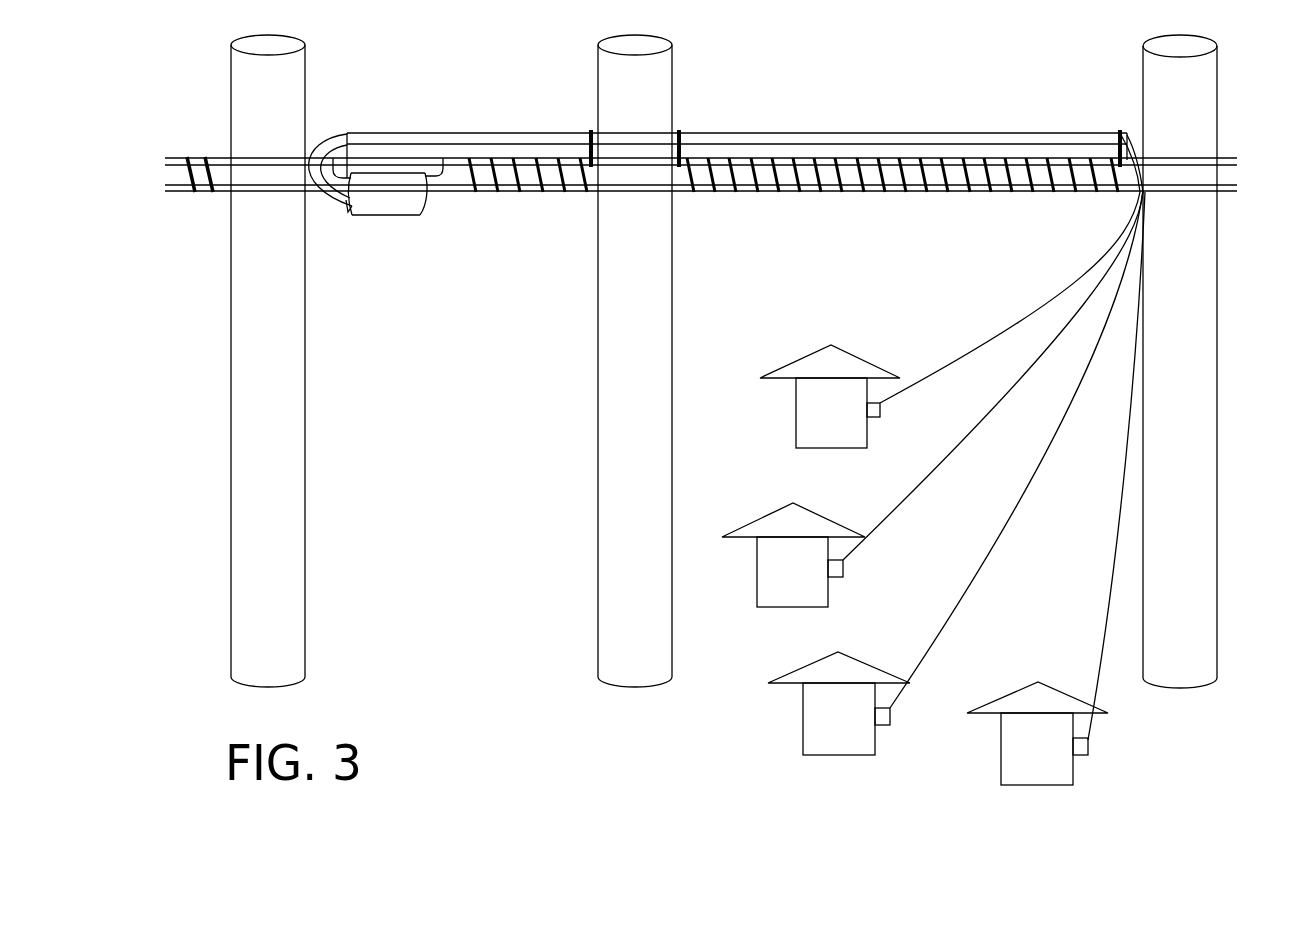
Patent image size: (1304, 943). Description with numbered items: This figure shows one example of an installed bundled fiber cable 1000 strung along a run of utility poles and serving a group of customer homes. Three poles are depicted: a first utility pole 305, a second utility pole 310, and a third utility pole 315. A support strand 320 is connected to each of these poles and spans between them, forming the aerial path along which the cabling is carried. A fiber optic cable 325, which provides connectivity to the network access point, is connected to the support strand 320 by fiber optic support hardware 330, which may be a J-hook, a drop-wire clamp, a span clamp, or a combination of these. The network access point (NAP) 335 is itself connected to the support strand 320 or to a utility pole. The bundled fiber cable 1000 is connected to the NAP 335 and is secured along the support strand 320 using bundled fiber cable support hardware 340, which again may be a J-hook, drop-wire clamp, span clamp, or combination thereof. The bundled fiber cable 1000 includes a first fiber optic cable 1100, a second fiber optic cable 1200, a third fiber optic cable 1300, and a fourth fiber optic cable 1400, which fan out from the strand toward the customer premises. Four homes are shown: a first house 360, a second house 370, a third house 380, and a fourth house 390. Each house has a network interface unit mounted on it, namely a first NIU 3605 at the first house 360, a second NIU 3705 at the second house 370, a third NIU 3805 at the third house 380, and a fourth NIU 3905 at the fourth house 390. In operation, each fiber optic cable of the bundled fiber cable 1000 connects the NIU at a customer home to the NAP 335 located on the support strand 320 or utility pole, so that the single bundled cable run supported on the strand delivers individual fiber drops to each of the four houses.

The first utility pole 305 is at (305, 459).
The second utility pole 310 is at (680, 465).
The third utility pole 315 is at (1217, 455).
The support strand 320 is at (220, 158).
The fiber optic cable 325 is at (220, 192).
The fiber optic support hardware 330 is at (190, 168).
The network access point (NAP) 335 is at (388, 214).
The bundled fiber cable support hardware 340 is at (347, 133).
The bundled fiber cable 1000 is at (915, 135).
The first fiber optic cable 1100 is at (978, 350).
The second fiber optic cable 1200 is at (972, 430).
The third fiber optic cable 1300 is at (990, 543).
The fourth fiber optic cable 1400 is at (1110, 607).
The first house 360 is at (830, 396).
The second house 370 is at (793, 555).
The third house 380 is at (839, 703).
The fourth house 390 is at (1037, 733).
The first NIU 3605 is at (882, 417).
The second NIU 3705 is at (838, 577).
The third NIU 3805 is at (883, 727).
The fourth NIU 3905 is at (1085, 757).